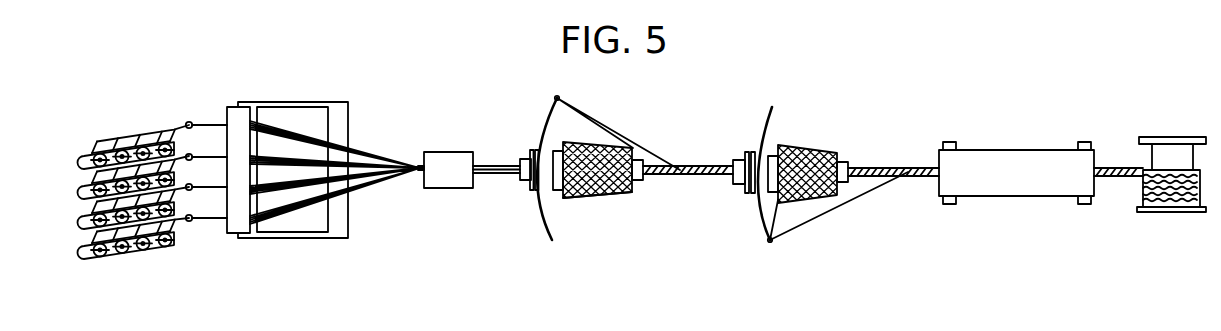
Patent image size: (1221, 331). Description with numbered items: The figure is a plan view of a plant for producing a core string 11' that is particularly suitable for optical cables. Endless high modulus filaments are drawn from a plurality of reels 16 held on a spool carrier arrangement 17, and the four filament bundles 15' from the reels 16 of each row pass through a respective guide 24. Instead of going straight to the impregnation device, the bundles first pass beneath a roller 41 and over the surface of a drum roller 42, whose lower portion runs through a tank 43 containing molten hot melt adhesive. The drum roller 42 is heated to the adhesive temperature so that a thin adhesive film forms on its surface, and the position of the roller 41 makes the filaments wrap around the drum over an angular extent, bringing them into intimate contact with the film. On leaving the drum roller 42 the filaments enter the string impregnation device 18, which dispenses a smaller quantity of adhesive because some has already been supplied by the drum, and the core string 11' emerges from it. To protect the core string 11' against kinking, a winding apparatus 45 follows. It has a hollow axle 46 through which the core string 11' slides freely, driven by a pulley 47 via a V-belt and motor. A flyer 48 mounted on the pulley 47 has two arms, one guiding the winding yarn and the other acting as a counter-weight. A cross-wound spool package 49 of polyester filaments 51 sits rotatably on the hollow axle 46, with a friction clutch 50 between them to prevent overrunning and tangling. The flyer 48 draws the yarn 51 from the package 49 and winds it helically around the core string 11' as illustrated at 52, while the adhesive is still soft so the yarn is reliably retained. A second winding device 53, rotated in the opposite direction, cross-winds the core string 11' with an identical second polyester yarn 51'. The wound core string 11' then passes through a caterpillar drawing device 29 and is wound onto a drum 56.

The filament bundles 15' is at (107, 173).
The reels 16 is at (84, 151).
The spool carrier arrangement 17 is at (139, 123).
The guide 24 is at (193, 156).
The roller 41 is at (242, 106).
The drum roller 42 is at (288, 224).
The tank 43 is at (341, 228).
The string impregnation device 18 is at (452, 178).
The core string 11' is at (603, 191).
The pulley 47 is at (531, 190).
The flyer 48 is at (544, 133).
The friction clutch 50 is at (558, 191).
The cross-wound spool package 49 is at (594, 199).
The winding apparatus 45 is at (620, 196).
The hollow axle 46 is at (641, 181).
The polyester filaments 51 is at (618, 134).
The helical winding 52 is at (733, 164).
The second winding device 53 is at (821, 146).
The second polyester yarn 51' is at (833, 175).
The caterpillar drawing device 29 is at (1025, 182).
The drum 56 is at (1173, 211).